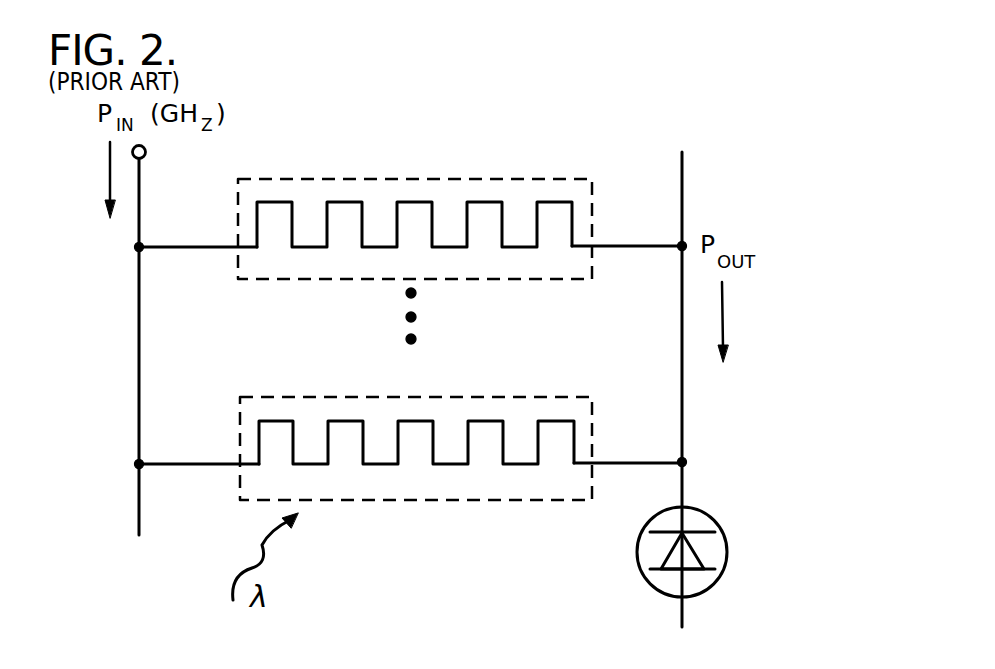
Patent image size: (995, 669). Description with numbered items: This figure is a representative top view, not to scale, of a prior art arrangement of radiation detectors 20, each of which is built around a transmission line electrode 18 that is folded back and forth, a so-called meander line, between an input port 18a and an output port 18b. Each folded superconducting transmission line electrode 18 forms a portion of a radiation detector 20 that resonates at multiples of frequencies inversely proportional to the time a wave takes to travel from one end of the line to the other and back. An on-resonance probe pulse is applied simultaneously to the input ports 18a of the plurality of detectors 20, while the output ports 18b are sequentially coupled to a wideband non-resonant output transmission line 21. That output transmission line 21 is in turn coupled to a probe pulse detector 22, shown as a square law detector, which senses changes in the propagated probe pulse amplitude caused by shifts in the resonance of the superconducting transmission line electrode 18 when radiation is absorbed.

The transmission line electrode 18 is at (308, 249).
The input port 18a is at (216, 246).
The output port 18b is at (628, 245).
The radiation detector 20 is at (545, 177).
The output transmission line 21 is at (682, 418).
The probe pulse detector 22 is at (702, 592).